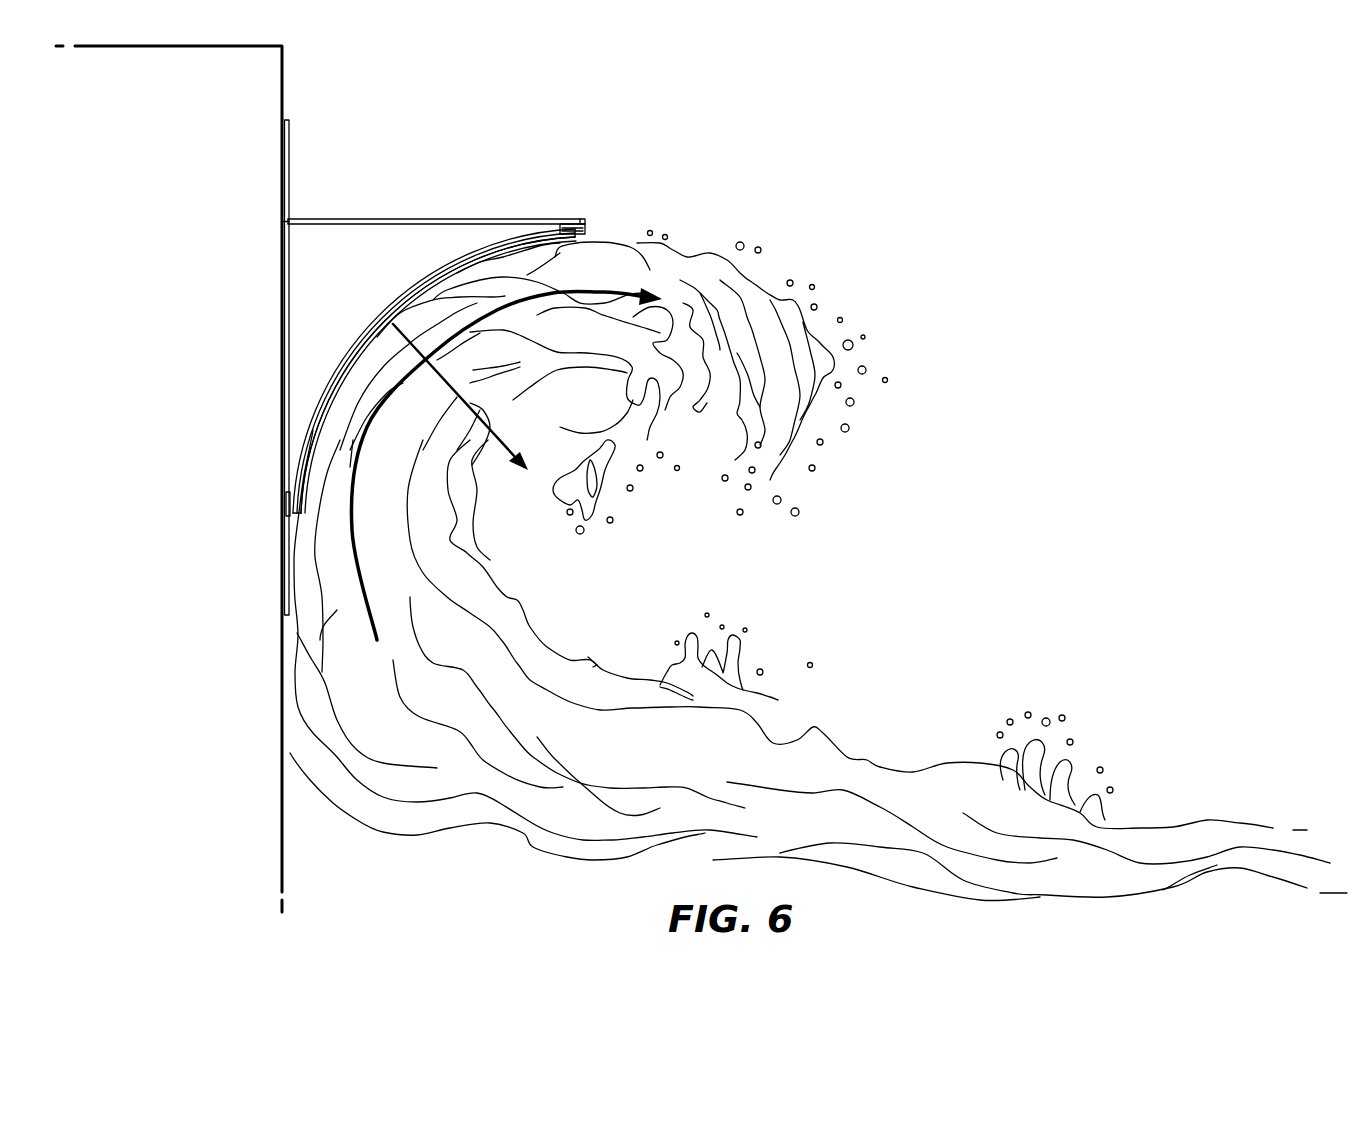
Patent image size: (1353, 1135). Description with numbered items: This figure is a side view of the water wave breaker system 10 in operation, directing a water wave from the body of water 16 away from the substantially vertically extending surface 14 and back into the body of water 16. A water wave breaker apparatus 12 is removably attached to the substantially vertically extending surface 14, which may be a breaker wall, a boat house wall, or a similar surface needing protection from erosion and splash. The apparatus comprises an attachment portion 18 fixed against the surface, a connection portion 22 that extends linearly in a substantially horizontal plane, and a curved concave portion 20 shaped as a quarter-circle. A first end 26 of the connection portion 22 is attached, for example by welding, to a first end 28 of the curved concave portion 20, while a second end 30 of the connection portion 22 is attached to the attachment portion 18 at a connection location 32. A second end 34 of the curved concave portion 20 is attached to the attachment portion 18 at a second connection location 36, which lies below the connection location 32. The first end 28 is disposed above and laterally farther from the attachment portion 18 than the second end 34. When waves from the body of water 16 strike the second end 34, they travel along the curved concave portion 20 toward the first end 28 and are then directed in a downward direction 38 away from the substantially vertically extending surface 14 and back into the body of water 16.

The water wave breaker system 10 is at (698, 72).
The water wave breaker apparatus 12 is at (346, 219).
The substantially vertically extending surface 14 is at (281, 78).
The body of water 16 is at (910, 770).
The attachment portion 18 is at (291, 137).
The curved concave portion 20 is at (487, 275).
The connection portion 22 is at (408, 228).
The first end of the connection portion 26 is at (572, 222).
The first end of the curved concave portion 28 is at (580, 247).
The second end of the connection portion 30 is at (295, 218).
The connection location 32 is at (282, 225).
The second end of the curved concave portion 34 is at (295, 500).
The second connection location 36 is at (282, 505).
The downward direction 38 is at (500, 432).